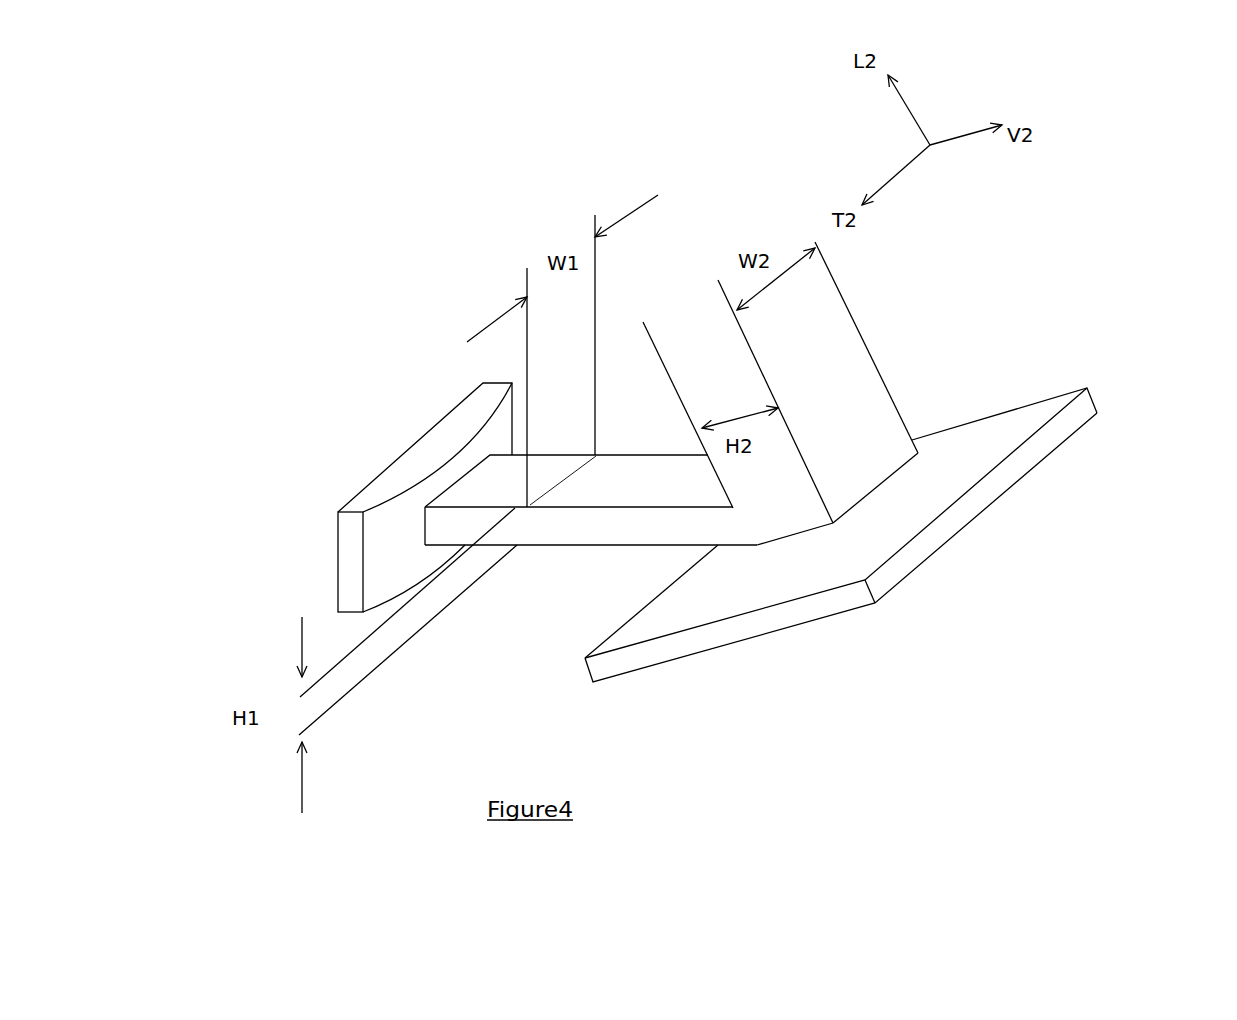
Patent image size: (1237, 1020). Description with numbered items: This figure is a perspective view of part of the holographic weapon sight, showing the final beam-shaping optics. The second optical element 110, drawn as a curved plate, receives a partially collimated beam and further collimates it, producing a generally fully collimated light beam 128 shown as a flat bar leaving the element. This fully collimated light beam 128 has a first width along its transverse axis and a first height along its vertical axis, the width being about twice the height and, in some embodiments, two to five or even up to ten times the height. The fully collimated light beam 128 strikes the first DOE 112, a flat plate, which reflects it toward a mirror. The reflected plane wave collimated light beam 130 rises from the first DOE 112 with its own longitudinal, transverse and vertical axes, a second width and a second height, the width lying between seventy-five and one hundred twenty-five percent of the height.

The second optical element 110 is at (313, 540).
The fully collimated light beam 128 is at (577, 552).
The plane wave collimated light beam 130 is at (895, 389).
The first DOE 112 is at (877, 620).